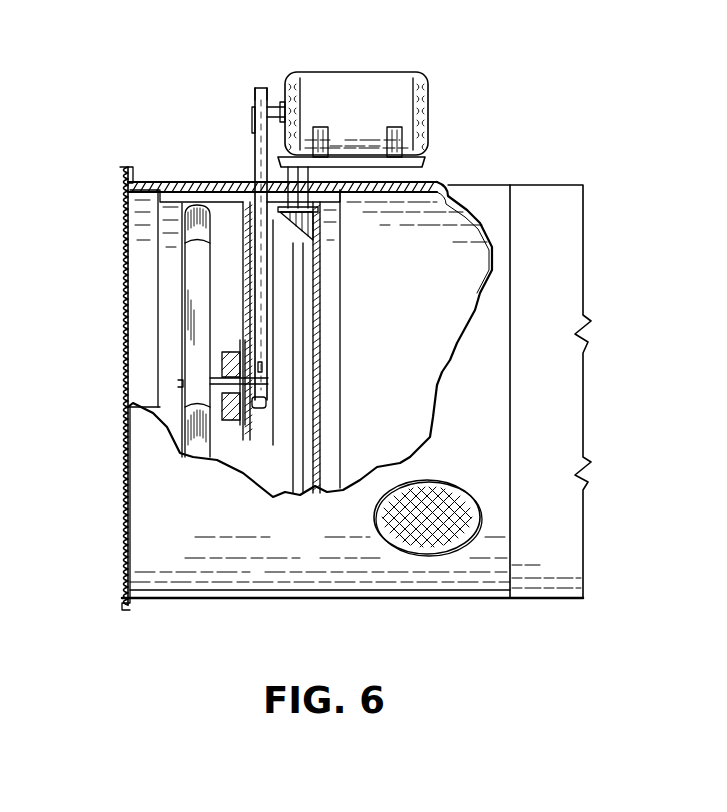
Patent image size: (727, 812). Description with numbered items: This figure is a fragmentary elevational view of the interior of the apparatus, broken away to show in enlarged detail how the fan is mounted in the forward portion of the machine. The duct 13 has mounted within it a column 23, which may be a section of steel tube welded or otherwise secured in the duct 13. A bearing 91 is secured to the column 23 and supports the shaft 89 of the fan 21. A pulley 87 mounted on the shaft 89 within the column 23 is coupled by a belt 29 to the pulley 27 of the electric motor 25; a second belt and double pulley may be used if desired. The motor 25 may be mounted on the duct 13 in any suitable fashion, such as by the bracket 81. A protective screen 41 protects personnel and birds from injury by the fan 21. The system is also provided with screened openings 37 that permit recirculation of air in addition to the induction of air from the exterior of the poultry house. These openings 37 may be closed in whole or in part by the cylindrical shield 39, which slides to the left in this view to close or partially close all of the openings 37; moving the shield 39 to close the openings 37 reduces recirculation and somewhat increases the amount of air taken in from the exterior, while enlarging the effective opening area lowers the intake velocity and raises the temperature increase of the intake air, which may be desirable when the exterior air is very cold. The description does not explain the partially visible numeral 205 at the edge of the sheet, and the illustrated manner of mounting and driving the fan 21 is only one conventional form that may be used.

The duct 13 is at (387, 598).
The fan 21 is at (183, 298).
The column 23 is at (320, 410).
The motor 25 is at (330, 72).
The pulley of electric motor 27 is at (253, 98).
The belt 29 is at (253, 158).
The screened openings 37 is at (422, 480).
The cylindrical shield 39 is at (557, 183).
The protective screen 41 is at (118, 230).
The bracket 81 is at (425, 165).
The pulley 87 is at (267, 370).
The shaft 89 is at (220, 352).
The bearing 91 is at (228, 423).
The partial numeral 205 is at (533, 2).